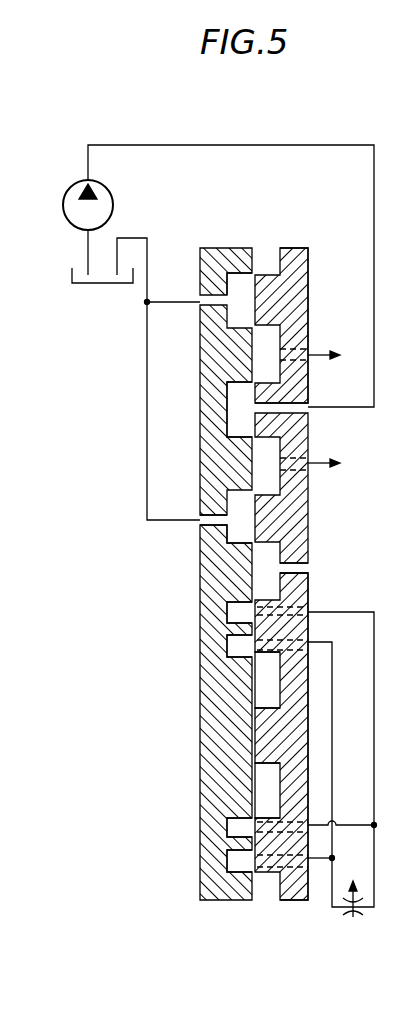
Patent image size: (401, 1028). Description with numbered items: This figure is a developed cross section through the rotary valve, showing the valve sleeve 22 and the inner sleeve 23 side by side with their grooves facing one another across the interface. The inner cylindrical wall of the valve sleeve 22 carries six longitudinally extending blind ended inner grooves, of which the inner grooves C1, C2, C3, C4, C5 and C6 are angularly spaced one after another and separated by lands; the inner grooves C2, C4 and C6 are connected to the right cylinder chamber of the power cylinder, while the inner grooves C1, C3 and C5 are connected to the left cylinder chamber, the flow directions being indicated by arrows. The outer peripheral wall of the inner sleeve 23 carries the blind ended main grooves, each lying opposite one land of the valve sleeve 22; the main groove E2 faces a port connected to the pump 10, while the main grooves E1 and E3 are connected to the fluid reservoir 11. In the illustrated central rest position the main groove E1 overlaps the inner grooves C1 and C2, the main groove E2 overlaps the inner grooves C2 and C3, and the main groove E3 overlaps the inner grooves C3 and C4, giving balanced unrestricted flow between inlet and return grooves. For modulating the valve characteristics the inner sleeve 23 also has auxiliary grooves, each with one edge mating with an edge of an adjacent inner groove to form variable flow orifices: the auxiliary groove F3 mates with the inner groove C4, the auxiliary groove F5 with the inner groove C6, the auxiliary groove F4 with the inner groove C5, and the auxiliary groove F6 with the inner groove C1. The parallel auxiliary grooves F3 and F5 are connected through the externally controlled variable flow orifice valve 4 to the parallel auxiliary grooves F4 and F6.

The pump 10 is at (113, 197).
The fluid reservoir 11 is at (107, 286).
The valve sleeve 22 is at (298, 307).
The inner sleeve 23 is at (212, 352).
The inner groove C1 is at (274, 268).
The inner groove C2 is at (287, 348).
The inner groove C3 is at (284, 484).
The inner groove C4 is at (280, 562).
The inner groove C5 is at (278, 691).
The inner groove C6 is at (278, 794).
The main groove E1 is at (239, 278).
The main groove E2 is at (225, 415).
The main groove E3 is at (228, 542).
The auxiliary groove F3 is at (226, 615).
The auxiliary groove F4 is at (226, 653).
The auxiliary groove F5 is at (226, 831).
The auxiliary groove F6 is at (226, 870).
The externally controlled variable flow orifice valve 4 is at (353, 922).